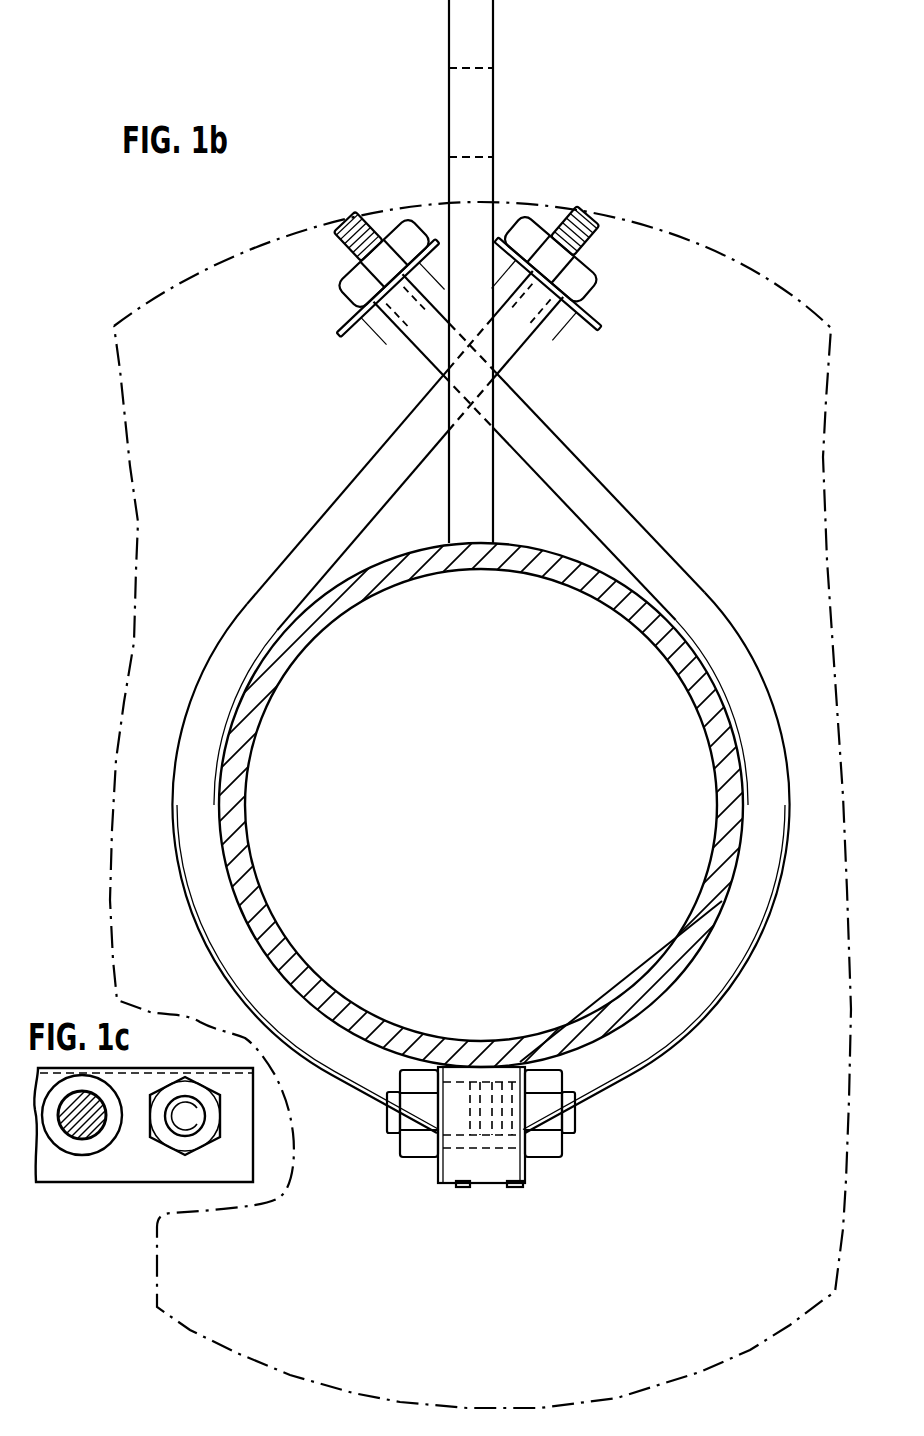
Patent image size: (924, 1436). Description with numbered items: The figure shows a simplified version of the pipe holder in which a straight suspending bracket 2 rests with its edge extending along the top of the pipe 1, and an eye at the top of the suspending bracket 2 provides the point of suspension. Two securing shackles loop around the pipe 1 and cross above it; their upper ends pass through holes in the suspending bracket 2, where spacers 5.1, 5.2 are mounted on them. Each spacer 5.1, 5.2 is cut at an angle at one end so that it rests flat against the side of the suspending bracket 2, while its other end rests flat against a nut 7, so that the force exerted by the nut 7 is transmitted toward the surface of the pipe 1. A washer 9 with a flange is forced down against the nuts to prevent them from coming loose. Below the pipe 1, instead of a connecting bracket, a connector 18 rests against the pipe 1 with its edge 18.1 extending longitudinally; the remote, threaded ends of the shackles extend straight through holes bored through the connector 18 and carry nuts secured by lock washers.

In FIG. 1b, the pipe 1 is at (594, 570).
In FIG. 1b, the suspending bracket 2 is at (482, 182).
In FIG. 1b, the spacer 5.1 is at (545, 342).
In FIG. 1b, the spacer 5.2 is at (398, 337).
In FIG. 1b, the nut 7 is at (349, 291).
In FIG. 1b, the washer 9 is at (340, 327).
In FIG. 1b, the connector 18 is at (493, 1167).
In FIG. 1c, the connector 18 is at (127, 1172).
In FIG. 1c, the edge of connector 18.1 is at (73, 1152).